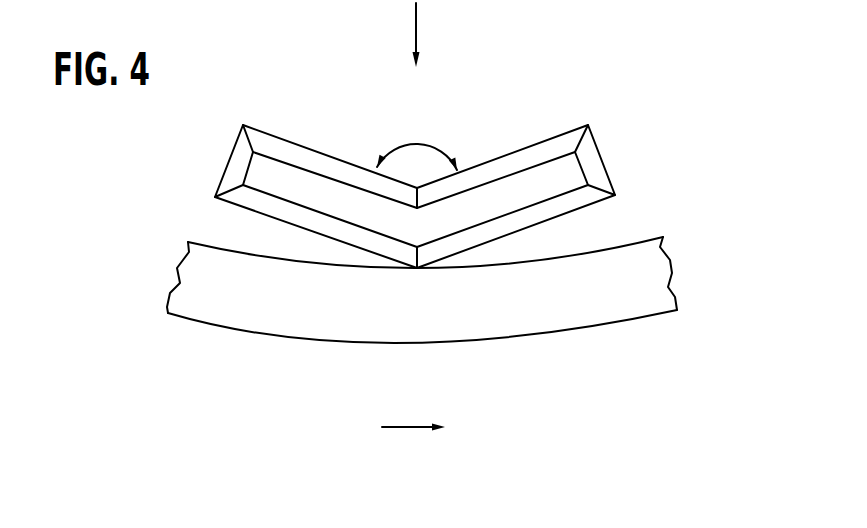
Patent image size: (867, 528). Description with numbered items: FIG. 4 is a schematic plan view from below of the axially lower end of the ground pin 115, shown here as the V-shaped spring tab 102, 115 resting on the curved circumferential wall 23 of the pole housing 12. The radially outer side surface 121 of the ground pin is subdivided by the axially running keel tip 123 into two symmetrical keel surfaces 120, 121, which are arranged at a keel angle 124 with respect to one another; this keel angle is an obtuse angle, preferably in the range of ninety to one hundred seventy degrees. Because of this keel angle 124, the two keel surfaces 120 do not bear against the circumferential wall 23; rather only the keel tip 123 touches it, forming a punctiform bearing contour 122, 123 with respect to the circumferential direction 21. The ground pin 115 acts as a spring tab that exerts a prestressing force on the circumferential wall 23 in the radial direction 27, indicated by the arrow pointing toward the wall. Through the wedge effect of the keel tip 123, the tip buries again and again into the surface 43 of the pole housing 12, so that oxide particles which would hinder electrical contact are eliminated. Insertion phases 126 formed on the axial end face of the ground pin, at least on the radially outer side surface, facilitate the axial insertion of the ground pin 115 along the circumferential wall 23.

The pole housing 12 is at (455, 268).
The circumferential wall 23 is at (455, 268).
The surface 43 is at (213, 245).
The spring element 102 is at (446, 247).
The ground pin 115 is at (446, 247).
The keel surfaces 120 is at (426, 247).
The side surface 121 is at (426, 247).
The punctiform bearing contour 122 is at (406, 295).
The keel tip 123 is at (417, 268).
The keel angle 124 is at (417, 130).
The insertion phases 126 is at (293, 213).
The radial direction 27 is at (416, 30).
The circumferential direction 21 is at (403, 428).